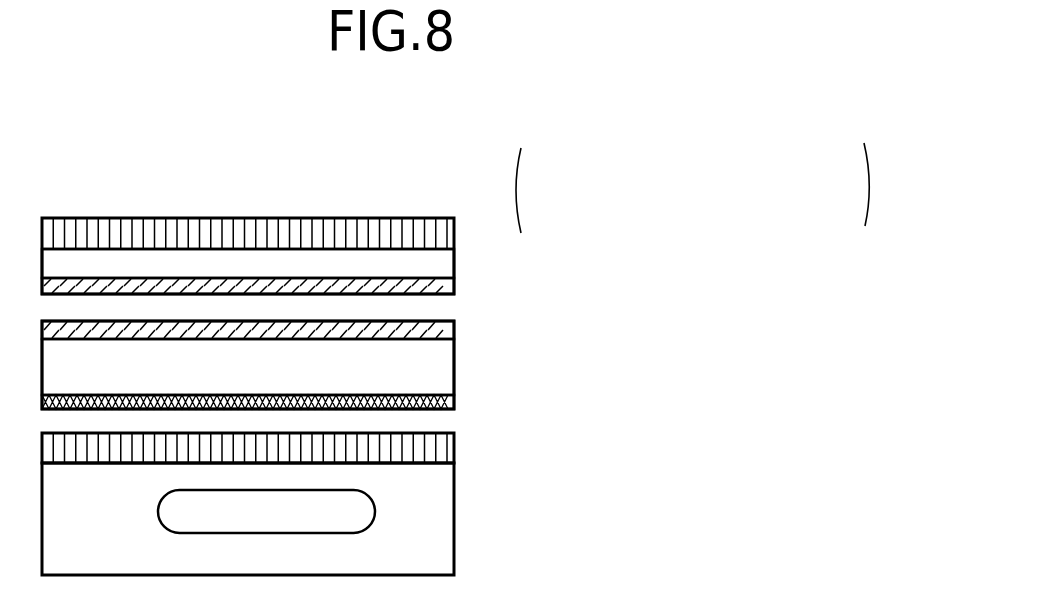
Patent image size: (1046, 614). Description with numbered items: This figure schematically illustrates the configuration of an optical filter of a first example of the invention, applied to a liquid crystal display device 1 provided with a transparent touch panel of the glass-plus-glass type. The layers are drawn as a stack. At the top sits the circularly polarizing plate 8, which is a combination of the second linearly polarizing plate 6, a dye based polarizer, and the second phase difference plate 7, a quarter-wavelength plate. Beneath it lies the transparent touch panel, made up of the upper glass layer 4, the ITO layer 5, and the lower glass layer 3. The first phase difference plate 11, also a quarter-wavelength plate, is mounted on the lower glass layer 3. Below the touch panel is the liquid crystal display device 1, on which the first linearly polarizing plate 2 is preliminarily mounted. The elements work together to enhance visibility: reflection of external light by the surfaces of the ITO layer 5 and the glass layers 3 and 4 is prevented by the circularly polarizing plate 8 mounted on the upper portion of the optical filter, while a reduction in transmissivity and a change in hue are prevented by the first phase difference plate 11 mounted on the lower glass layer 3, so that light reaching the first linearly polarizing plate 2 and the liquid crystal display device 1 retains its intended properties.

The circularly polarizing plate 8 is at (464, 188).
The second linearly polarizing plate 6 is at (452, 194).
The second phase difference plate 7 is at (432, 241).
The upper glass layer 4 is at (454, 272).
The ITO layer 5 is at (454, 294).
The lower glass layer 3 is at (454, 370).
The first phase difference plate 11 is at (454, 405).
The first linearly polarizing plate 2 is at (454, 462).
The liquid crystal display device 1 is at (454, 540).